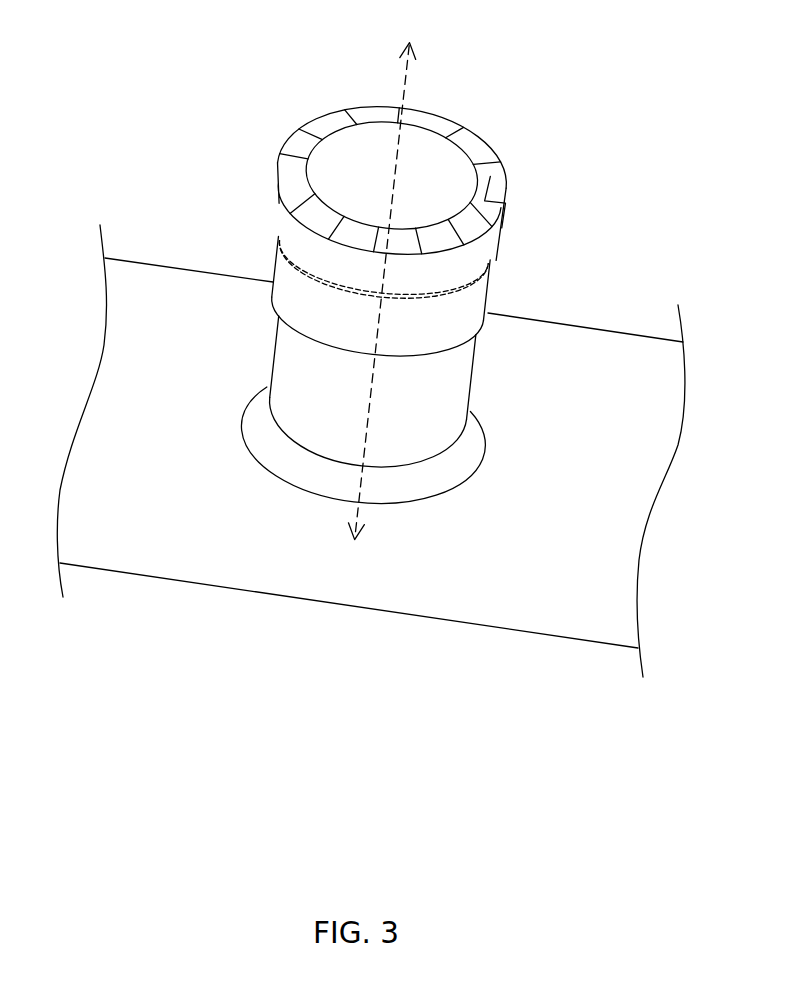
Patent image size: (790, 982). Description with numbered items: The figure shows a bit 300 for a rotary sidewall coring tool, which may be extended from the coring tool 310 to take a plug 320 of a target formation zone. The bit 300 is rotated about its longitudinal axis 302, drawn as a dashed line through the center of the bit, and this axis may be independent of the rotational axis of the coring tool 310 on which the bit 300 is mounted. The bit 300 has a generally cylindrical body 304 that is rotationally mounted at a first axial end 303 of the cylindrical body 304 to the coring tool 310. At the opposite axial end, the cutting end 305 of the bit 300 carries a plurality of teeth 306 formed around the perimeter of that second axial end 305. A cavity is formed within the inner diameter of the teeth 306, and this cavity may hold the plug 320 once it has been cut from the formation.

The bit 300 is at (297, 88).
The longitudinal axis 302 is at (389, 277).
The first axial end 303 is at (472, 450).
The cylindrical body 304 is at (487, 313).
The cutting end 305 is at (498, 148).
The teeth 306 is at (273, 192).
The coring tool 310 is at (178, 290).
The plug 320 is at (323, 128).